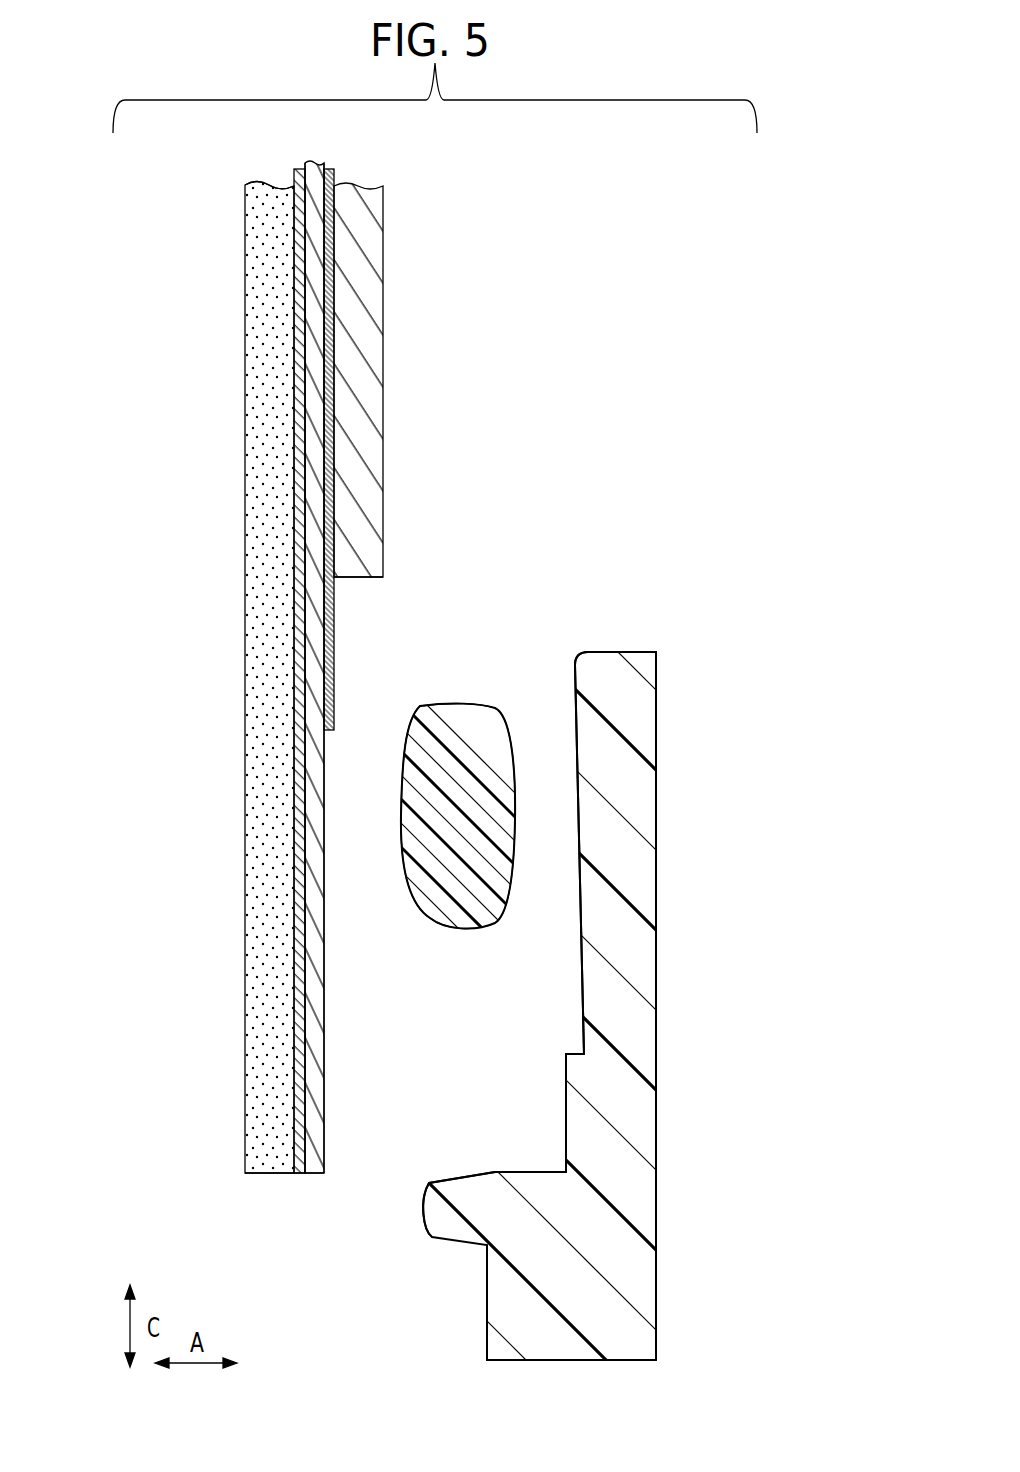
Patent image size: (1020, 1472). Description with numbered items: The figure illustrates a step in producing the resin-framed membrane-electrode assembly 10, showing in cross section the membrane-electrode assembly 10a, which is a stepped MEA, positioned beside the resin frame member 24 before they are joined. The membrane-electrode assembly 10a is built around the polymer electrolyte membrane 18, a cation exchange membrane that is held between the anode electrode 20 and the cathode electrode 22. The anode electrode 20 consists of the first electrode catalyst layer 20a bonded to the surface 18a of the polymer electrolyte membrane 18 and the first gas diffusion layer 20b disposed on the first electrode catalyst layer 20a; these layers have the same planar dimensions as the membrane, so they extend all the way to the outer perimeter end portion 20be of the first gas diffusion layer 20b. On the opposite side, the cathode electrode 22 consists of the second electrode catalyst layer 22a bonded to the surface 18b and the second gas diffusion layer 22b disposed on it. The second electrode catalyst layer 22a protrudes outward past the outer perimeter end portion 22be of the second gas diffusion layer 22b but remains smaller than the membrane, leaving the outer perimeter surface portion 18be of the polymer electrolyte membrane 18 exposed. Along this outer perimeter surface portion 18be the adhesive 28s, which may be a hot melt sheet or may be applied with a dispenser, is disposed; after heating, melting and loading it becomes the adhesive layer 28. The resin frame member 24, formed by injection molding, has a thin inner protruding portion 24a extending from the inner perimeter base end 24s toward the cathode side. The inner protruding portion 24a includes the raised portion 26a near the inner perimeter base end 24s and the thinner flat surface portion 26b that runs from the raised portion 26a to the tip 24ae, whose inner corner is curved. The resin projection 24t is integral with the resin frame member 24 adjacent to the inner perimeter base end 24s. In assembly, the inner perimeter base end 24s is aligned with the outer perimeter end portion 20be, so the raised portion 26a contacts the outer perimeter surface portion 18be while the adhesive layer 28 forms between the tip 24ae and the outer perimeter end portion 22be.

The resin-framed membrane-electrode assembly 10 is at (517, 143).
The membrane-electrode assembly 10a is at (244, 195).
The polymer electrolyte membrane 18 is at (319, 642).
The surface of the polymer electrolyte membrane 18a is at (298, 226).
The surface of the polymer electrolyte membrane 18b is at (328, 226).
The outer perimeter surface portion 18be is at (325, 1008).
The anode electrode 20 is at (212, 705).
The first electrode catalyst layer 20a is at (300, 267).
The first gas diffusion layer 20b is at (273, 303).
The outer perimeter end portion of the first gas diffusion layer 20be is at (272, 1178).
The cathode electrode 22 is at (418, 449).
The second electrode catalyst layer 22a is at (336, 262).
The second gas diffusion layer 22b is at (355, 298).
The outer perimeter end portion of the second gas diffusion layer 22be is at (355, 579).
The resin frame member 24 is at (510, 996).
The inner protruding portion 24a is at (648, 897).
The tip of the inner protruding portion 24ae is at (637, 648).
The inner perimeter base end 24s is at (521, 1170).
The resin projection 24t is at (439, 1227).
The raised portion 26a is at (571, 1070).
The flat surface portion 26b is at (582, 960).
The adhesive layer 28 is at (443, 794).
The adhesive 28s is at (468, 713).